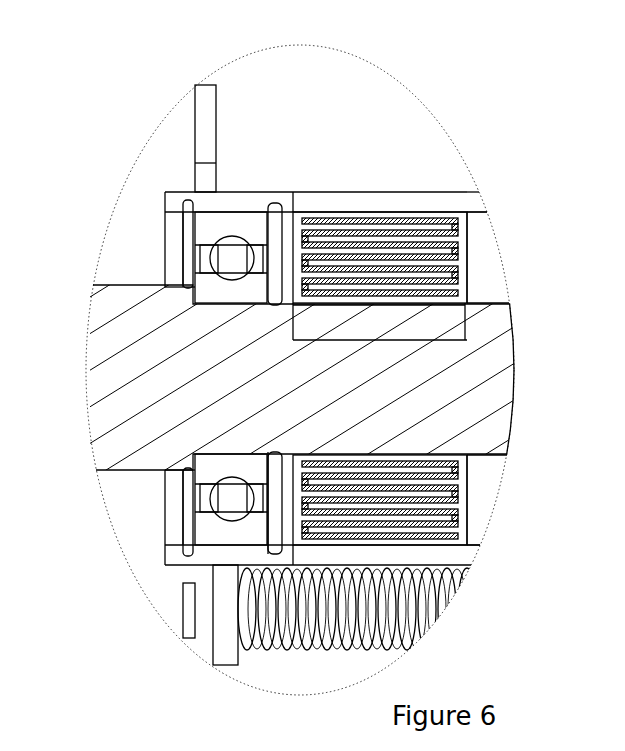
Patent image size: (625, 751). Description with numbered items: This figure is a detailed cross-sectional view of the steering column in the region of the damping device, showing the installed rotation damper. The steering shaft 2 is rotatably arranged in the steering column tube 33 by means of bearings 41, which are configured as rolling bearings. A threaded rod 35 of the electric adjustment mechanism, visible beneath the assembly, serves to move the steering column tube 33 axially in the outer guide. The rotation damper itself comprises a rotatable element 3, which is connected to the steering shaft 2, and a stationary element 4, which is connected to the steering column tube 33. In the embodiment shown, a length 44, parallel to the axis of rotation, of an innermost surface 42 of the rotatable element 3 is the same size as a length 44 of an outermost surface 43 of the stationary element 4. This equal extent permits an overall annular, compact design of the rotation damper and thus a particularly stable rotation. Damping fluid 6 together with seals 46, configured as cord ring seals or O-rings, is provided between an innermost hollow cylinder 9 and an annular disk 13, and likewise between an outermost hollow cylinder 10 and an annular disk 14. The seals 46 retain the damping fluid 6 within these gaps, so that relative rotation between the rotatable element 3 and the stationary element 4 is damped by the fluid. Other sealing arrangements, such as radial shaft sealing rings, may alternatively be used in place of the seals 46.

The steering shaft 2 is at (478, 410).
The rotatable element 3 is at (297, 225).
The stationary element 4 is at (478, 523).
The damping fluid 6 is at (468, 243).
The innermost hollow cylinder 9 is at (262, 475).
The outermost hollow cylinder 10 is at (312, 222).
The annular disk 13 is at (478, 501).
The annular disk 14 is at (262, 522).
The steering column tube 33 is at (412, 200).
The threaded rod 35 is at (410, 633).
The bearings 41 is at (237, 255).
The innermost surface 42 is at (467, 340).
The outermost surface 43 is at (455, 195).
The length 44 is at (415, 320).
The seals 46 is at (480, 470).